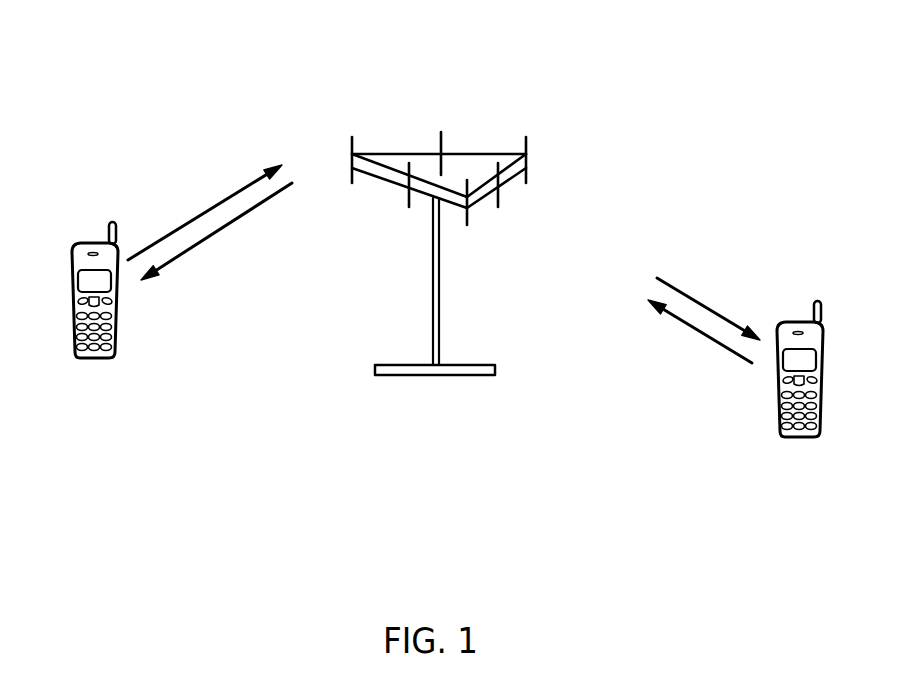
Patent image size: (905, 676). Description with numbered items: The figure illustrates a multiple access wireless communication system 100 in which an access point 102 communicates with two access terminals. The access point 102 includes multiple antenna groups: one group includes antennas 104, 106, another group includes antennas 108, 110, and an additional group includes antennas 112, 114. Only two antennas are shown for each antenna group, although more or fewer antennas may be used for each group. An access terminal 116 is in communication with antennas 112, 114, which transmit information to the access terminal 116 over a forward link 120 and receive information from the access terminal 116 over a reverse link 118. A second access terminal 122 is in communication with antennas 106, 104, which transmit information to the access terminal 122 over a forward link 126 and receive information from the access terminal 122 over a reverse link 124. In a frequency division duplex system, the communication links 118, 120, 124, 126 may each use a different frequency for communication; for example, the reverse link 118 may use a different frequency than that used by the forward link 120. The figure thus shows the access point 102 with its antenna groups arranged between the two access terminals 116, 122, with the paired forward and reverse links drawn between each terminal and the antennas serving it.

The multiple access wireless communication system 100 is at (756, 80).
The access point 102 is at (448, 376).
The antenna 104 is at (468, 222).
The antenna 106 is at (500, 200).
The antenna 108 is at (528, 169).
The antenna 110 is at (442, 133).
The antenna 112 is at (350, 141).
The antenna 114 is at (407, 200).
The access terminal 116 is at (95, 360).
The reverse link 118 is at (210, 208).
The forward link 120 is at (207, 238).
The access terminal 122 is at (798, 437).
The reverse link 124 is at (700, 332).
The forward link 126 is at (693, 298).